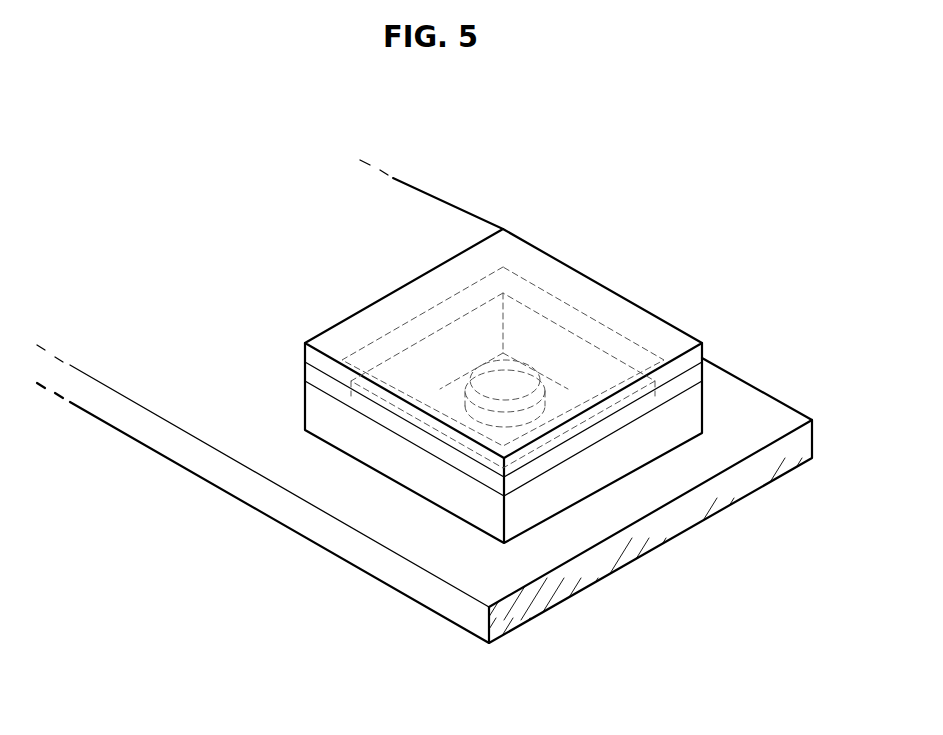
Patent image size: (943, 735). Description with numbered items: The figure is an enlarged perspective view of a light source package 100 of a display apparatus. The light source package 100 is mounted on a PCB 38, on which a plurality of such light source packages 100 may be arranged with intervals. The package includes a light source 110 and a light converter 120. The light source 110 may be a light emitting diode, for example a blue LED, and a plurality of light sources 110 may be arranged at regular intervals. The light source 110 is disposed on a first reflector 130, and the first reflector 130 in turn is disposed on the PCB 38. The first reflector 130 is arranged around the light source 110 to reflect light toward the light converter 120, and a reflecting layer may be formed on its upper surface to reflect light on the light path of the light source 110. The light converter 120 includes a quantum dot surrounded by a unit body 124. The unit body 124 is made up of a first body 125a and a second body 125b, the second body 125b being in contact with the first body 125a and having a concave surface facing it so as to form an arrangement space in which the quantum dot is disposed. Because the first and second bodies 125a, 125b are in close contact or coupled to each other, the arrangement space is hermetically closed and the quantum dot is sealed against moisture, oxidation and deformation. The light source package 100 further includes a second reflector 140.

The PCB 38 is at (505, 570).
The light source package 100 is at (512, 416).
The light source 110 is at (497, 423).
The light converter 120 is at (518, 226).
The unit body 124 is at (557, 356).
The first body 125a is at (667, 340).
The second body 125b is at (705, 370).
The first reflector 130 is at (647, 445).
The second reflector 140 is at (470, 385).